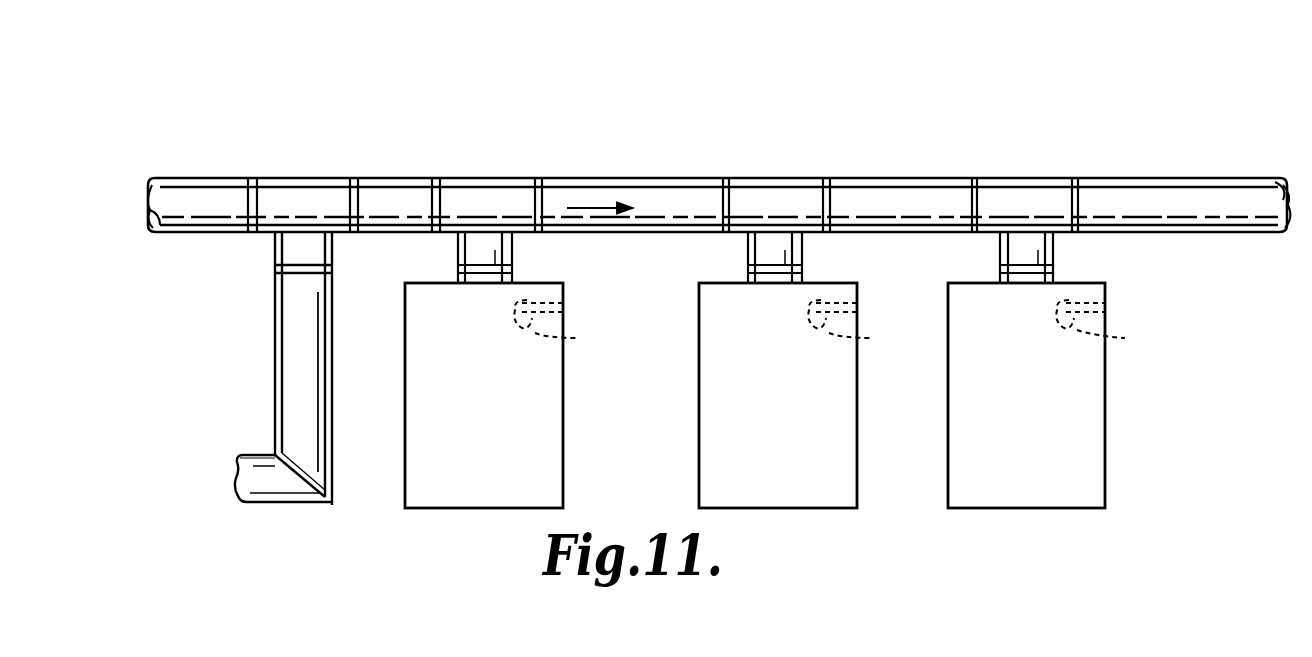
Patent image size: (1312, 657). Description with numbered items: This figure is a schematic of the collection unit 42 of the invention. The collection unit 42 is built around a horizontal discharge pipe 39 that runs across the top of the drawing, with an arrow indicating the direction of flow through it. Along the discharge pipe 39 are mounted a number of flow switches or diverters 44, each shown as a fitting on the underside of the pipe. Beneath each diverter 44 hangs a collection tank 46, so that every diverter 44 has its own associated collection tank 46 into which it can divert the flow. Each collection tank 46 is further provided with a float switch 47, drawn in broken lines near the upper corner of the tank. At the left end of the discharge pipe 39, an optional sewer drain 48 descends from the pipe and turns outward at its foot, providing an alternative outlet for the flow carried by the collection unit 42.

The discharge pipe 39 is at (212, 176).
The collection unit 42 is at (950, 138).
The flow switch or diverter 44 is at (505, 178).
The collection tank 46 is at (487, 497).
The float switch 47 is at (842, 328).
The sewer drain 48 is at (302, 510).